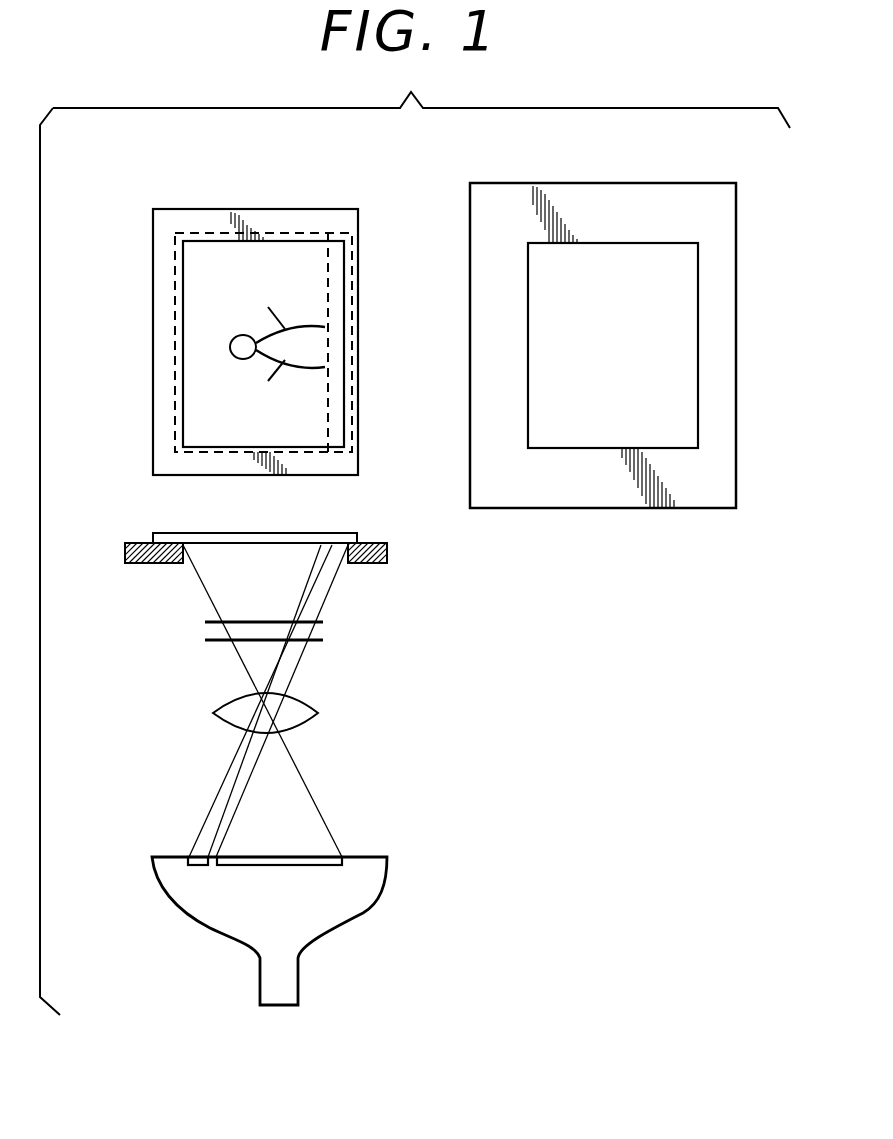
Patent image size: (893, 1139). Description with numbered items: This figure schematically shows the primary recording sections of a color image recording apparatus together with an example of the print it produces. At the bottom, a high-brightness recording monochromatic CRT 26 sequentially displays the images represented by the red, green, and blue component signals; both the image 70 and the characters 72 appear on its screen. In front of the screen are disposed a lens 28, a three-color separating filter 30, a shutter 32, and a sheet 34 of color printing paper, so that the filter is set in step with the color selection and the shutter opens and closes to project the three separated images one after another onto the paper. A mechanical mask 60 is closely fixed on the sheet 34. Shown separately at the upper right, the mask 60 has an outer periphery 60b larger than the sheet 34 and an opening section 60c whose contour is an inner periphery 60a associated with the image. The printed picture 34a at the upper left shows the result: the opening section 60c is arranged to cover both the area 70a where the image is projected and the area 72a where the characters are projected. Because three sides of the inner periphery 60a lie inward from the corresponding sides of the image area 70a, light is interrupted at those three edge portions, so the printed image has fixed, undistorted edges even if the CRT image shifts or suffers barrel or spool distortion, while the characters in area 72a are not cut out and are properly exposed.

The recording monochromatic CRT 26 is at (338, 927).
The lens 28 is at (318, 712).
The three-color separating filter 30 is at (205, 640).
The shutter 32 is at (205, 622).
The sheet of color printing paper 34 is at (177, 533).
The printed image 34a is at (359, 468).
The mechanical mask 60 is at (420, 358).
The inner periphery 60a is at (287, 233).
The outer periphery 60b is at (667, 183).
The opening section 60c is at (677, 333).
The image 70 is at (265, 865).
The image projection area 70a is at (175, 345).
The characters 72 is at (200, 866).
The character projection area 72a is at (352, 290).